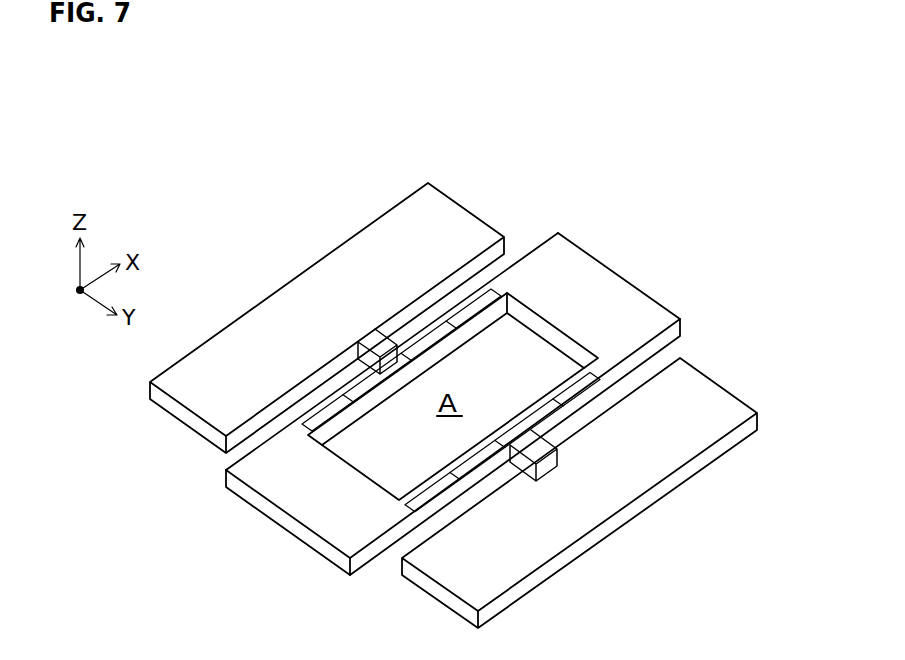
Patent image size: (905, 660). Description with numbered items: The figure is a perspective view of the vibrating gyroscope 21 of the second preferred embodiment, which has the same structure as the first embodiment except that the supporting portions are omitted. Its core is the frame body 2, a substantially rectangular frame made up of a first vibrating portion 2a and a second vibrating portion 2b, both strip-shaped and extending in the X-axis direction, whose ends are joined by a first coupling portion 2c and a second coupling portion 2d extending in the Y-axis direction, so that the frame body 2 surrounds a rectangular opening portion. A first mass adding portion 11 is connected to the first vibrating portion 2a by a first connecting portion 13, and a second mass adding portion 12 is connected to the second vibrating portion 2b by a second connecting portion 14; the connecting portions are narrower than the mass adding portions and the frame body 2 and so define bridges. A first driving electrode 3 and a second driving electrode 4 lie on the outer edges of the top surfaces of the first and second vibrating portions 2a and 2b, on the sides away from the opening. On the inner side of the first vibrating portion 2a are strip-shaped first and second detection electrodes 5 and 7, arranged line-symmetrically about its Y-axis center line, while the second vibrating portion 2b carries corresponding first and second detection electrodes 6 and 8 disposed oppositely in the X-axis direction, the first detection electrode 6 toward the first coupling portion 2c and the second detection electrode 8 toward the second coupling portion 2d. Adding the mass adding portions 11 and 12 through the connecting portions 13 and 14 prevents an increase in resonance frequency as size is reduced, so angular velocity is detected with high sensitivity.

The vibrating gyroscope 21 is at (288, 173).
The frame body 2 is at (241, 508).
The first vibrating portion 2a is at (497, 287).
The second vibrating portion 2b is at (607, 347).
The first coupling portion 2c is at (575, 263).
The second coupling portion 2d is at (334, 525).
The first mass adding portion 11 is at (291, 281).
The second mass adding portion 12 is at (707, 467).
The first driving electrode 3 is at (355, 388).
The second driving electrode 4 is at (488, 455).
The first detection electrode 5 is at (326, 408).
The first detection electrode 6 is at (597, 378).
The second detection electrode 7 is at (455, 322).
The second detection electrode 8 is at (437, 490).
The first connecting portion 13 is at (397, 344).
The second connecting portion 14 is at (557, 449).